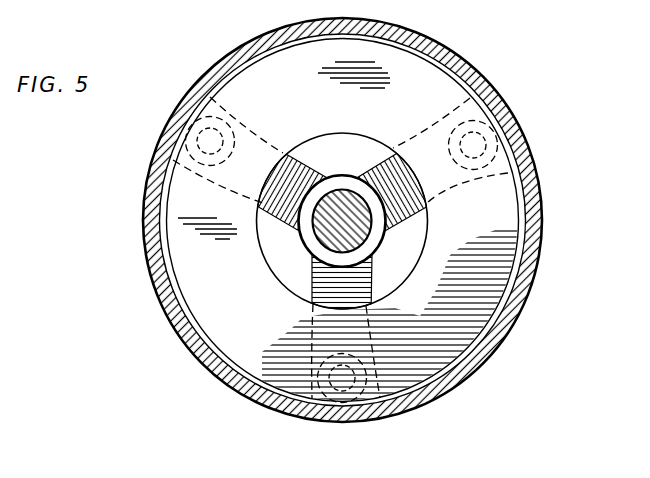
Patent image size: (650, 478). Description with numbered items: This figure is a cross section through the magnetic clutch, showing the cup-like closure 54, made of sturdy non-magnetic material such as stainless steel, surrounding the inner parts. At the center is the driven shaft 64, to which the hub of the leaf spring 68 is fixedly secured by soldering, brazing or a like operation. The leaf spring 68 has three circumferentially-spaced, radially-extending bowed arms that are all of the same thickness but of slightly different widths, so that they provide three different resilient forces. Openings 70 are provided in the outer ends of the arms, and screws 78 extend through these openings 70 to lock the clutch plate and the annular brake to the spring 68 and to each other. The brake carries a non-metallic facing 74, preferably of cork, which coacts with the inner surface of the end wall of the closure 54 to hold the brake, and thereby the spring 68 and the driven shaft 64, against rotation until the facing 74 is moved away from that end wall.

The closure 54 is at (457, 60).
The driven shaft 64 is at (322, 232).
The leaf spring 68 is at (371, 176).
The openings 70 is at (186, 146).
The brake facing 74 is at (492, 258).
The screws 78 is at (210, 140).